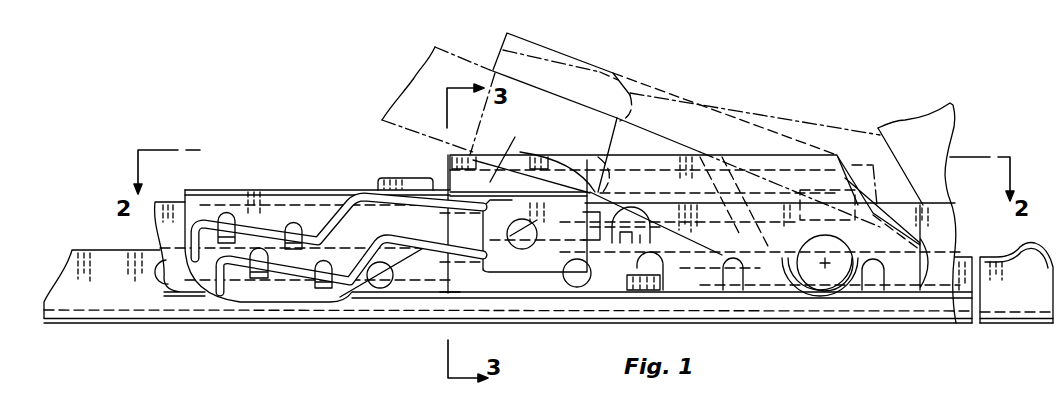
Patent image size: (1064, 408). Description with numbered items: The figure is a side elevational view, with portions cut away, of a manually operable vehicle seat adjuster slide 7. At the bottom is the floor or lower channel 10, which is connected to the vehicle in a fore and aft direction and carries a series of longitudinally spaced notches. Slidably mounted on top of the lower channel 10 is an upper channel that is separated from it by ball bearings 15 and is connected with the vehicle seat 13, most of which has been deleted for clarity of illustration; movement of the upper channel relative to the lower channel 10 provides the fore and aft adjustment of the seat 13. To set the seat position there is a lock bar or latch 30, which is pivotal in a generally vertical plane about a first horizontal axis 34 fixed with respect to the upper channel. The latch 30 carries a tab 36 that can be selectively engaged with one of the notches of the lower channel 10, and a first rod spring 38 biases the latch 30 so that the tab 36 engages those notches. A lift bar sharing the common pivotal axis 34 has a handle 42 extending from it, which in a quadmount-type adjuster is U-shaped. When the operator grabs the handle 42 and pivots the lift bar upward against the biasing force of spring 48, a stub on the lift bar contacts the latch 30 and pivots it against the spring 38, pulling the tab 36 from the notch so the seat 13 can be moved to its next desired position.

The seat adjuster slide 7 is at (234, 167).
The lower channel 10 is at (108, 303).
The vehicle seat 13 is at (930, 127).
The ball bearings 15 is at (175, 294).
The latch 30 is at (663, 92).
The first horizontal axis 34 is at (828, 266).
The tab 36 is at (447, 300).
The first rod spring 38 is at (332, 212).
The handle 42 is at (420, 82).
The spring 48 is at (290, 275).